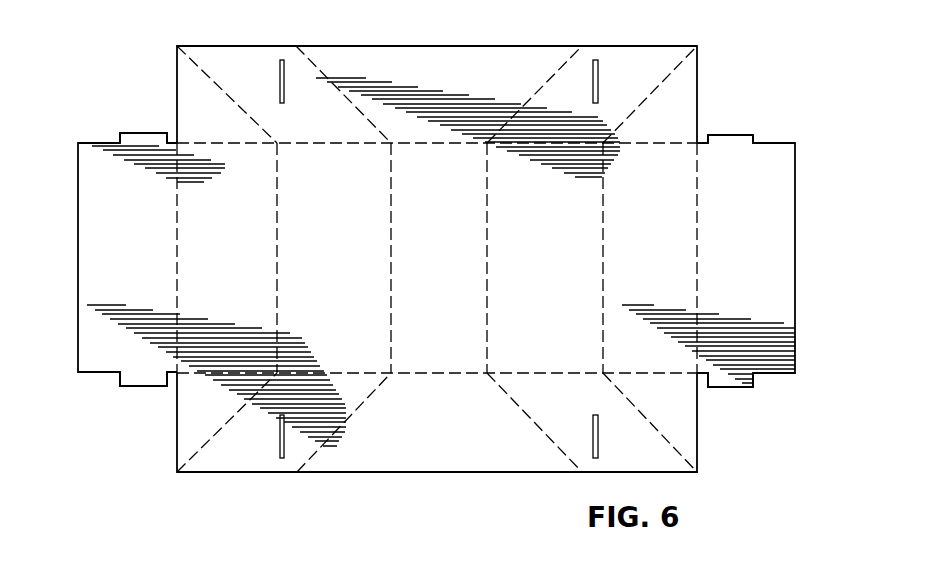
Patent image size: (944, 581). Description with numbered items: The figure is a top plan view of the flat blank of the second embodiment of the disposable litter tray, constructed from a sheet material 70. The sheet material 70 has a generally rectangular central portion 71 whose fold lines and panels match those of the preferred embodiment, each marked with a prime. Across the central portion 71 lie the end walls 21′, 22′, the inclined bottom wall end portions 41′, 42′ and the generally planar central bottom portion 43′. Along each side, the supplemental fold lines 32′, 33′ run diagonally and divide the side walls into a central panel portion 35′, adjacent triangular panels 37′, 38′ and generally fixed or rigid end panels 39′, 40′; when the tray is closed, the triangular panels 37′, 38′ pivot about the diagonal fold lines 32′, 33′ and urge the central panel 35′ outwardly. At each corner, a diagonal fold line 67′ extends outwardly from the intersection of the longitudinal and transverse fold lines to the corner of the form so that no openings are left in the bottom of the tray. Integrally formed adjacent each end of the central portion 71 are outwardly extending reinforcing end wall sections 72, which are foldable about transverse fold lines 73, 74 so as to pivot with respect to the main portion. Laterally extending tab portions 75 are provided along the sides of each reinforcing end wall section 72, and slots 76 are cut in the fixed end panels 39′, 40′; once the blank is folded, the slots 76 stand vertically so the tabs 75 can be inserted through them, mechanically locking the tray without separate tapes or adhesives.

The sheet material 70 is at (454, 476).
The rectangular central portion 71 is at (544, 46).
The reinforcing end wall section 72 is at (102, 226).
The transverse fold line 73 is at (175, 274).
The transverse fold line 74 is at (700, 280).
The tab portion 75 is at (137, 133).
The slot 76 is at (284, 61).
The diagonal fold line 67′ is at (198, 66).
The end wall 21′ is at (241, 257).
The inclined bottom wall end portion 41′ is at (341, 257).
The central bottom portion 43′ is at (450, 257).
The inclined bottom wall end portion 42′ is at (555, 257).
The end wall 22′ is at (670, 257).
The supplemental fold line 32′ is at (312, 455).
The supplemental fold line 33′ is at (553, 447).
The central panel portion 35′ is at (461, 431).
The triangular panel 37′ is at (367, 448).
The triangular panel 38′ is at (522, 460).
The fixed end panel 39′ is at (351, 393).
The fixed end panel 40′ is at (572, 415).